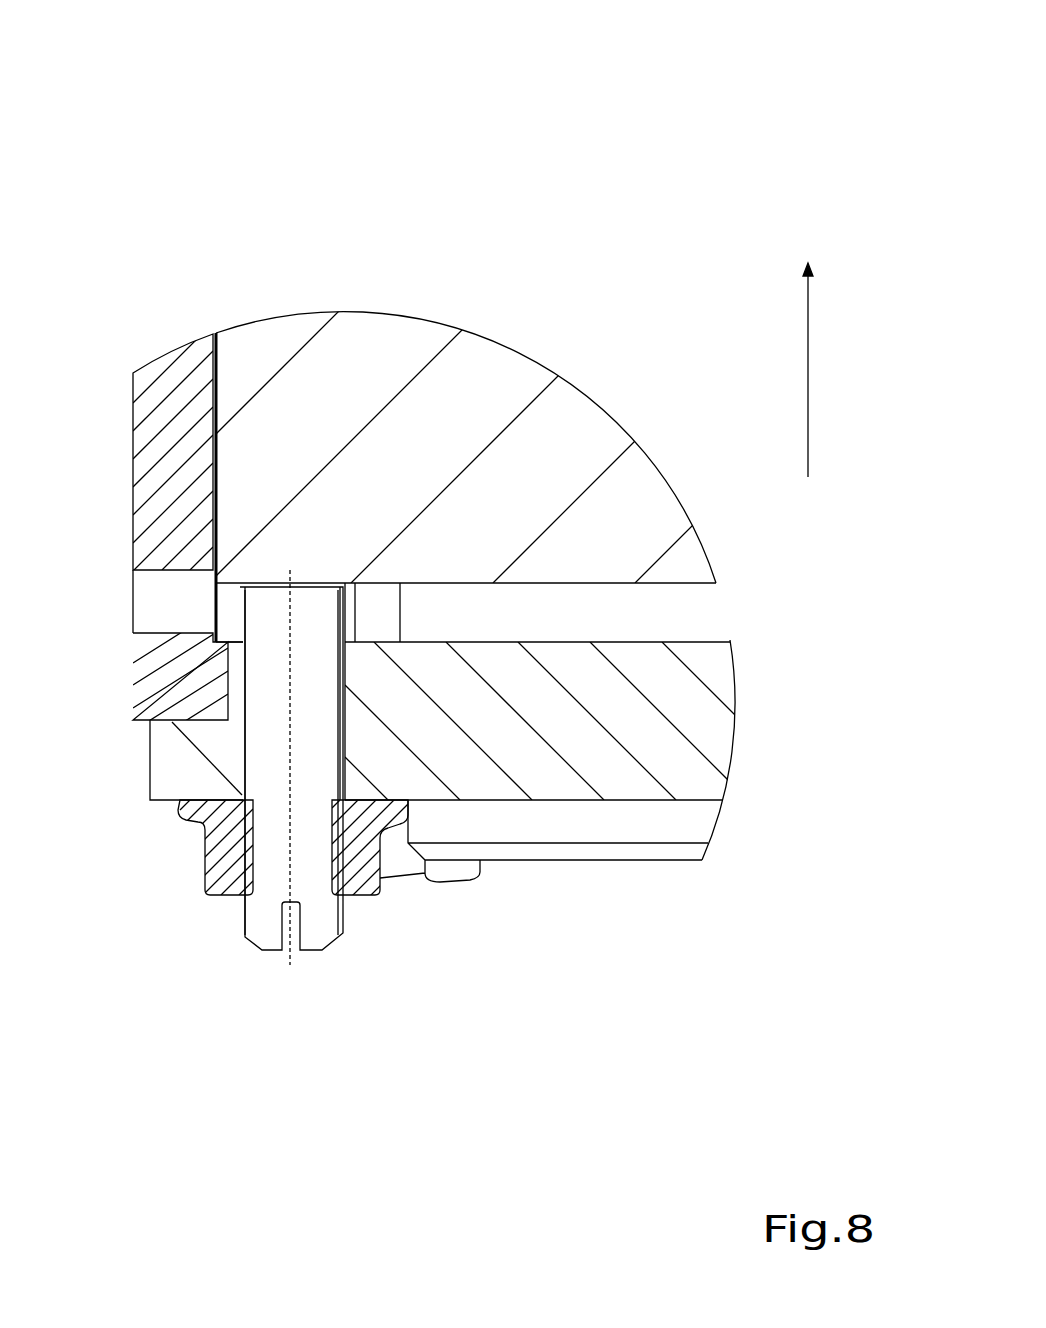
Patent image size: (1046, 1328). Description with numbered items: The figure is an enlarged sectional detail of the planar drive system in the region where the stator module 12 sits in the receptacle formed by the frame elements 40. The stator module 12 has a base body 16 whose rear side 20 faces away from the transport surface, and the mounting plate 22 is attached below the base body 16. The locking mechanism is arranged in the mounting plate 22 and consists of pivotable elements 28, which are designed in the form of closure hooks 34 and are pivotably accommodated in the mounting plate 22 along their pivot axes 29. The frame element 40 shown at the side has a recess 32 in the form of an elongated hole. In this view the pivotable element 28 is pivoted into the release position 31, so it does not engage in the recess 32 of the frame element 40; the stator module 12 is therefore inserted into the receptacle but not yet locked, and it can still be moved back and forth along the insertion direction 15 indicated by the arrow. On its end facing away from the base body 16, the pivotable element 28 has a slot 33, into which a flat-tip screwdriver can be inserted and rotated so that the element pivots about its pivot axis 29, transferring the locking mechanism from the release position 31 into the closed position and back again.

The release position 31 is at (585, 123).
The stator module 12 is at (512, 477).
The base body 16 is at (412, 450).
The frame element 40 is at (170, 445).
The recess 32 is at (160, 593).
The closure hook 34 is at (267, 657).
The rear side 20 is at (618, 583).
The mounting plate 22 is at (510, 743).
The slot 33 is at (291, 925).
The pivot axis 29 is at (290, 857).
The pivotable element 28 is at (307, 660).
The insertion direction 15 is at (833, 370).